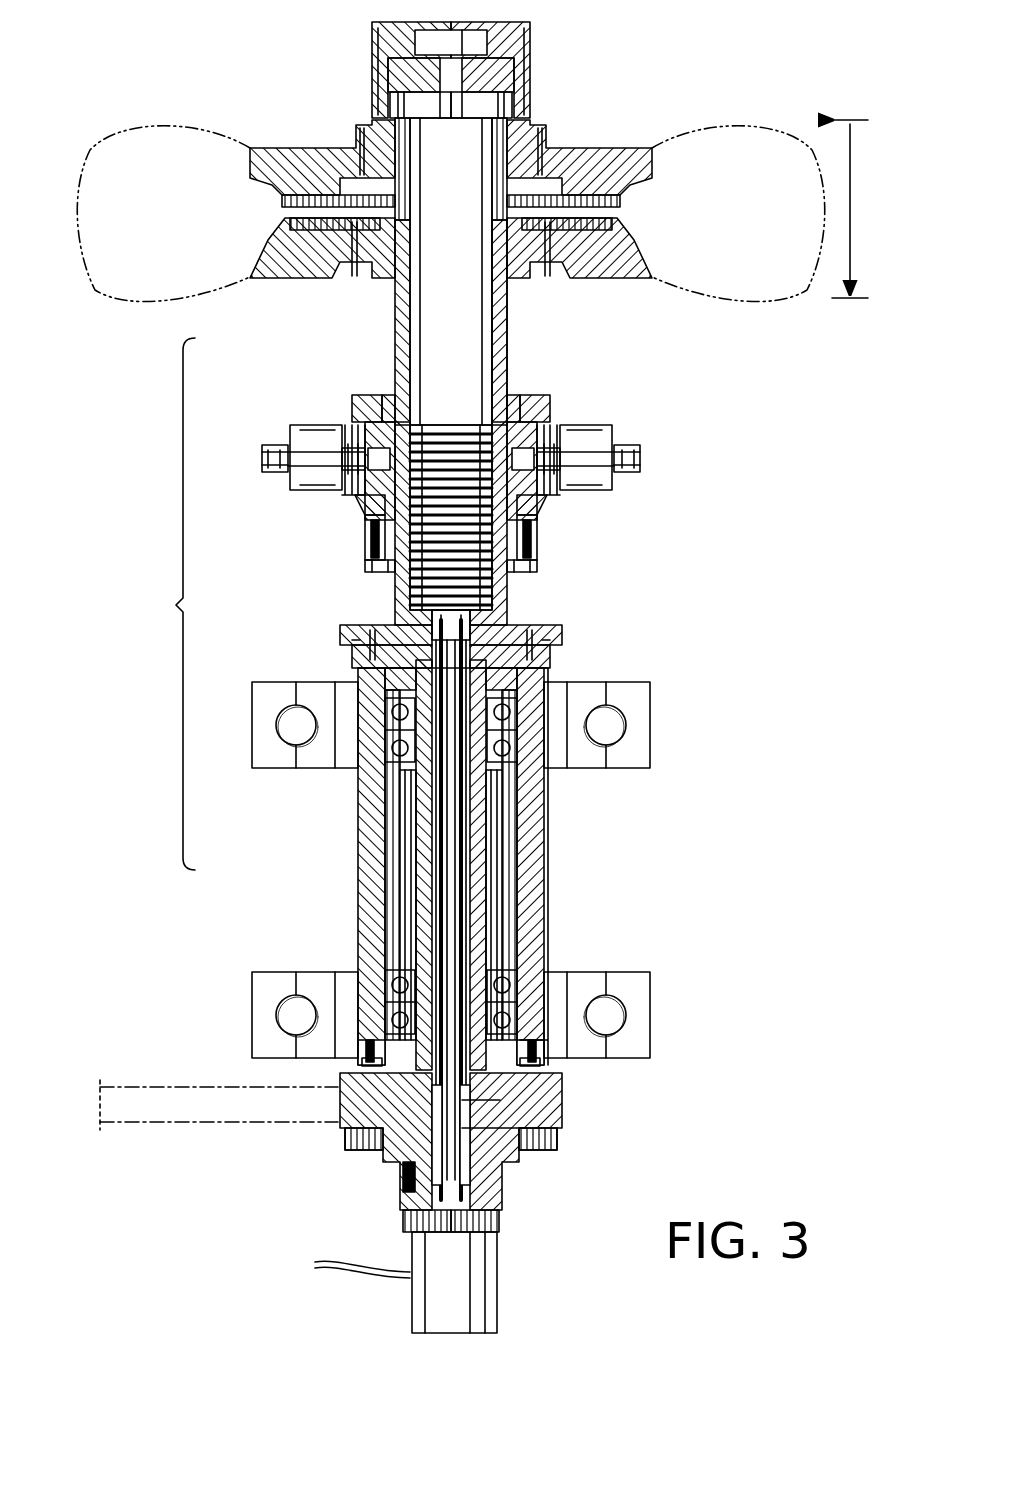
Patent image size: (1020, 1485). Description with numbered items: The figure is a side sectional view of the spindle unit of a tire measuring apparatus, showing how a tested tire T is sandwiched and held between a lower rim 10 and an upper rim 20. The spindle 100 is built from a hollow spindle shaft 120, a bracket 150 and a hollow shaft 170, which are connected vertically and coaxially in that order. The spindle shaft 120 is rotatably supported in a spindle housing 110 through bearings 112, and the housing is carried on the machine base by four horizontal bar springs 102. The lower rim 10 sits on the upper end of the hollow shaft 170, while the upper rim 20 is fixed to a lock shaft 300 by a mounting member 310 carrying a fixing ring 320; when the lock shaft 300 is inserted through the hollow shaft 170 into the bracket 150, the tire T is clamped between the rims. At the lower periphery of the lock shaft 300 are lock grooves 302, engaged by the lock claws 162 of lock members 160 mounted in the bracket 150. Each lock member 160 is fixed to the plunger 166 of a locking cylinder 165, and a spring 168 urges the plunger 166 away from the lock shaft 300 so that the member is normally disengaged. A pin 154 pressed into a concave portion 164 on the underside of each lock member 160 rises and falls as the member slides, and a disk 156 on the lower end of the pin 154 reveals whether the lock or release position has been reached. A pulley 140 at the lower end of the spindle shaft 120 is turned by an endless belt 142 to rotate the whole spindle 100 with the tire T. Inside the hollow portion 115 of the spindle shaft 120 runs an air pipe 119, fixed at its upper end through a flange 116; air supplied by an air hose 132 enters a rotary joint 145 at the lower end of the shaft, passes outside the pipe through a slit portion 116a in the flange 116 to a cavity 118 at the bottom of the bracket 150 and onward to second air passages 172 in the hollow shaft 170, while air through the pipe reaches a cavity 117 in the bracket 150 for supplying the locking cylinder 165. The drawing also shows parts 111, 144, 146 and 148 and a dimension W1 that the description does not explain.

The lower rim 10 is at (315, 272).
The upper rim 20 is at (325, 150).
The spindle 100 is at (159, 604).
The horizontal bar springs 102 is at (285, 728).
The spindle housing 110 is at (548, 812).
The bearings 111 is at (520, 880).
The bearings 112 is at (528, 960).
The hollow portion 115 is at (395, 905).
The flange 116 is at (395, 609).
The slit portion 116a is at (340, 650).
The cavity 117 is at (510, 600).
The cavity 118 is at (500, 625).
The air pipe 119 is at (450, 930).
The spindle shaft 120 is at (412, 855).
The air hose 132 is at (315, 1262).
The pulley 140 is at (570, 1103).
The endless belt 142 is at (210, 1125).
The lower housing 144 is at (530, 1150).
The rotary joint 145 is at (498, 1272).
The seal 146 is at (402, 1175).
The coupling 148 is at (505, 1210).
The bracket 150 is at (395, 583).
The pins 154 is at (370, 520).
The disk 156 is at (370, 566).
The lock members 160 is at (365, 430).
The lock claws 162 is at (385, 395).
The concave portion 164 is at (355, 503).
The locking cylinder 165 is at (305, 442).
The plunger 166 is at (345, 455).
The spring 168 is at (275, 450).
The hollow shaft 170 is at (385, 323).
The second air passages 172 is at (500, 335).
The lock shaft 300 is at (630, 345).
The lock grooves 302 is at (455, 440).
The mounting member 310 is at (530, 75).
The fixing ring 320 is at (530, 35).
The tested tire T is at (760, 302).
The tire width W1 is at (865, 209).